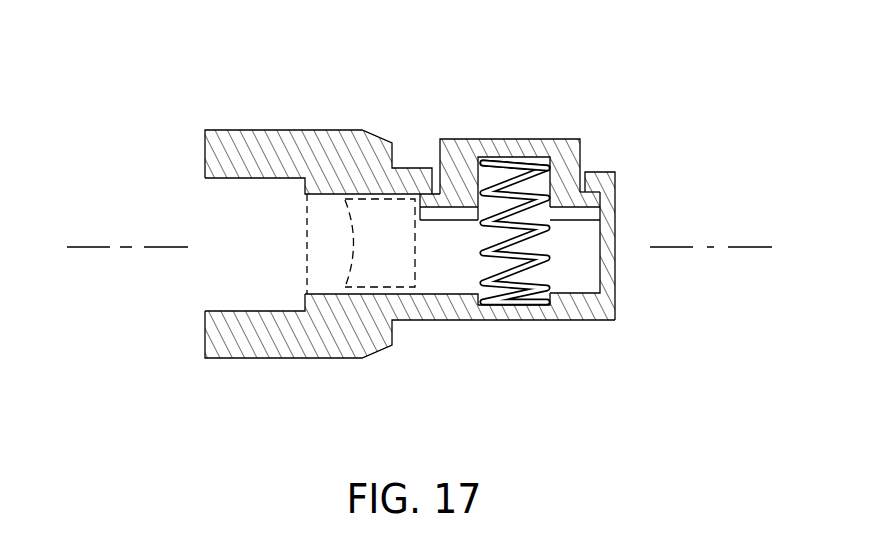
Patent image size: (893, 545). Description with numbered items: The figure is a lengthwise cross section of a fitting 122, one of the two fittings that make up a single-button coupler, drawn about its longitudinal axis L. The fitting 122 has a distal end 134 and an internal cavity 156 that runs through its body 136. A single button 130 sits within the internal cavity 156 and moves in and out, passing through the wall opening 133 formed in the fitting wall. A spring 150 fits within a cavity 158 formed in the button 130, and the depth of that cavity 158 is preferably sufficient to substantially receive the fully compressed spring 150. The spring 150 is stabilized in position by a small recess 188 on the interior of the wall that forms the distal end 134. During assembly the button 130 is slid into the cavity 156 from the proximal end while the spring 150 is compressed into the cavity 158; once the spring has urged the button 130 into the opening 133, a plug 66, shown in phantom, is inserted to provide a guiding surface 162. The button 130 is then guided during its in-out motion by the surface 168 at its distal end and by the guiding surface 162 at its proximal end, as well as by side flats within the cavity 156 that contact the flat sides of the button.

The fitting 122 is at (527, 67).
The button 130 is at (460, 138).
The wall opening 133 is at (582, 184).
The distal end 134 is at (587, 321).
The housing body 136 is at (267, 350).
The spring 150 is at (482, 277).
The internal cavity 156 is at (215, 282).
The cavity 158 is at (527, 167).
The guiding surface 162 is at (414, 262).
The surface 168 is at (594, 236).
The small recess 188 is at (513, 302).
The plug 66 is at (368, 248).
The longitudinal axis L is at (743, 245).